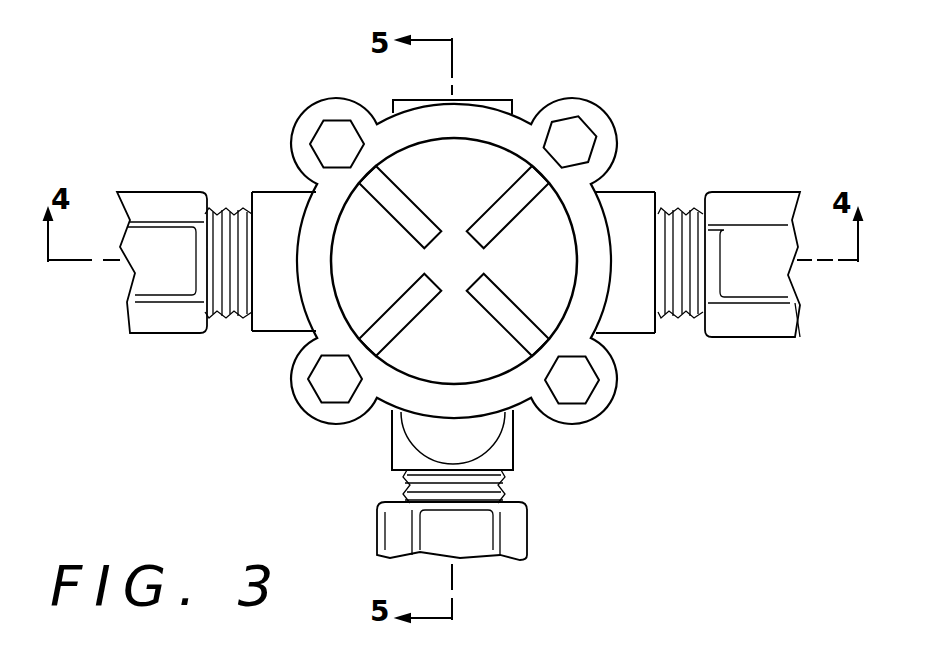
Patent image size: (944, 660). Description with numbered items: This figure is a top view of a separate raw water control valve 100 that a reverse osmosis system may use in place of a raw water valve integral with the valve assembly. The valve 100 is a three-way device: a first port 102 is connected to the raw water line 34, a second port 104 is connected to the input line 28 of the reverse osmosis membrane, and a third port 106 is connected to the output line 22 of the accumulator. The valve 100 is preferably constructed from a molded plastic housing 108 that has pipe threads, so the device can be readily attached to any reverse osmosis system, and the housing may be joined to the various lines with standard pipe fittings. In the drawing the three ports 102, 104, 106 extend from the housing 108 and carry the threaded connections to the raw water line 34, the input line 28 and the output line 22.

The raw water valve 100 is at (617, 136).
The first port 102 is at (228, 210).
The second port 104 is at (680, 313).
The third port 106 is at (507, 482).
The raw water line 34 is at (172, 325).
The input line 28 is at (748, 197).
The molded plastic housing 108 is at (778, 323).
The output line 22 is at (525, 545).